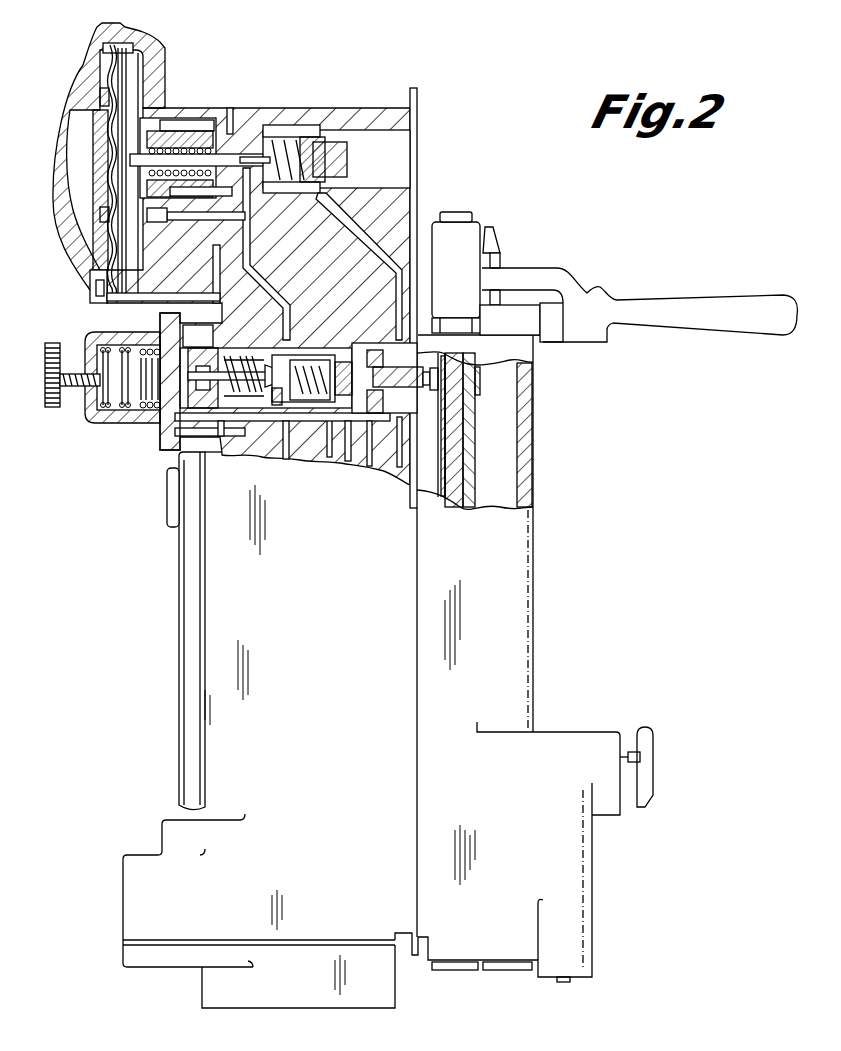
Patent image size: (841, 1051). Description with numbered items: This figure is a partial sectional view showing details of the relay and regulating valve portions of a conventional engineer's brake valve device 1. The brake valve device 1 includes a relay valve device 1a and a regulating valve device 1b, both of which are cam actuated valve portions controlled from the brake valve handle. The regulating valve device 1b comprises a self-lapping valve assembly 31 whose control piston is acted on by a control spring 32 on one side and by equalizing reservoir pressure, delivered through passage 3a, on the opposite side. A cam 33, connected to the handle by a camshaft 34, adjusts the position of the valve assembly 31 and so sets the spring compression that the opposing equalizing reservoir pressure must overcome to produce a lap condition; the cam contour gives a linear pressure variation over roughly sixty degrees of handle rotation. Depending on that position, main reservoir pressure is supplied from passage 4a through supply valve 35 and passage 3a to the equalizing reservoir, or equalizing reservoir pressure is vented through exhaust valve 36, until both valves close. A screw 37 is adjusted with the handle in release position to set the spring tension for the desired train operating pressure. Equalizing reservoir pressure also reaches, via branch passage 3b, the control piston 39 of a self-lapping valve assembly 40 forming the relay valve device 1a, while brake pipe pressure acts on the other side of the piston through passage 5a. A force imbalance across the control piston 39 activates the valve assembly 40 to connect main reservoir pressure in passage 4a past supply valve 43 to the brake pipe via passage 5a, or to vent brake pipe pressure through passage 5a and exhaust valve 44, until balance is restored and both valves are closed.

The engineer's brake valve device 1 is at (166, 50).
The relay valve device 1a is at (80, 48).
The regulating valve device 1b is at (88, 332).
The passage 3a is at (343, 457).
The branch passage 3b is at (196, 293).
The passage 4a is at (395, 274).
The passage 5a is at (245, 208).
The self-lapping valve assembly 31 is at (178, 440).
The control spring 32 is at (117, 410).
The cam 33 is at (432, 390).
The camshaft 34 is at (455, 405).
The supply valve 35 is at (282, 370).
The exhaust valve 36 is at (234, 382).
The screw 37 is at (50, 383).
The control piston 39 is at (110, 150).
The self-lapping valve assembly 40 is at (170, 125).
The supply valve 43 is at (280, 143).
The exhaust valve 44 is at (198, 133).